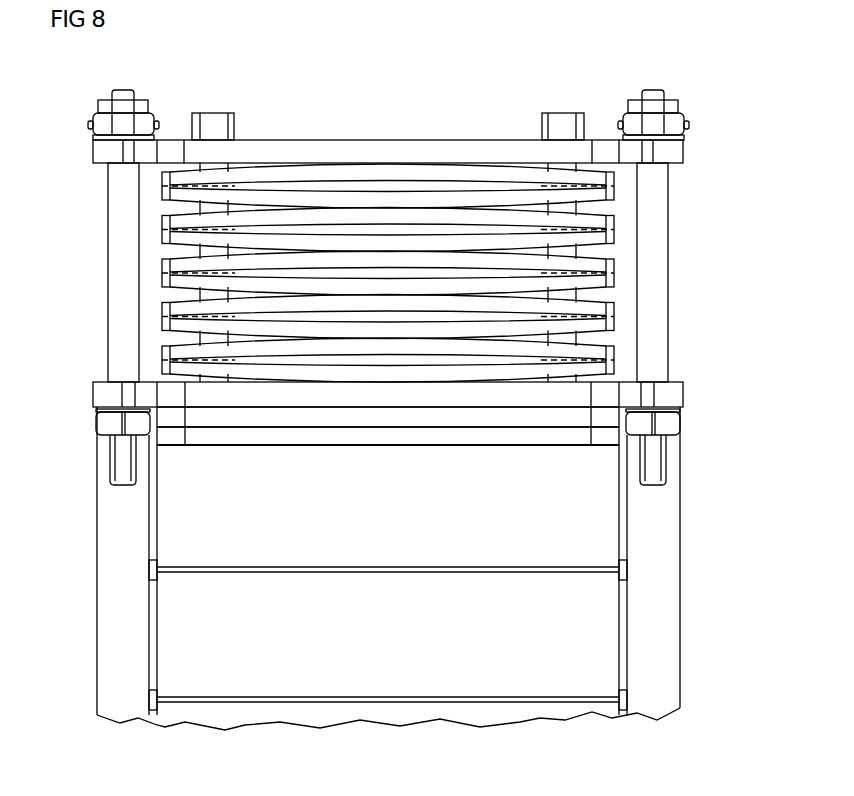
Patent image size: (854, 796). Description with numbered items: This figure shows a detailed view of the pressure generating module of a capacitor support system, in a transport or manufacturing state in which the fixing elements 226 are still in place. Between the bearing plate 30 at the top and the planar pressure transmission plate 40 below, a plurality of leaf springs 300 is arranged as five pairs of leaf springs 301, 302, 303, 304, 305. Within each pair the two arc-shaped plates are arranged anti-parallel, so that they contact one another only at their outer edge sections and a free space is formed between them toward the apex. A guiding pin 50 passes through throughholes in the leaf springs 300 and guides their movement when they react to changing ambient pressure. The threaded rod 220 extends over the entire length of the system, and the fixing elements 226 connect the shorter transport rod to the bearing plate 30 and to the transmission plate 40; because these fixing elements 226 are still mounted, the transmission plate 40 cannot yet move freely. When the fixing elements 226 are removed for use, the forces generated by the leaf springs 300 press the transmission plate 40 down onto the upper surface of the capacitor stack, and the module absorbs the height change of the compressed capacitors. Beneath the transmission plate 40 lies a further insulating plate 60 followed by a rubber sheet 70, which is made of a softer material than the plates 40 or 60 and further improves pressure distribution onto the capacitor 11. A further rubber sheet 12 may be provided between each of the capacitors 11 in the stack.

The capacitor 11 is at (602, 513).
The rubber sheet 12 is at (545, 572).
The bearing plate 30 is at (406, 150).
The pressure transmission plate 40 is at (380, 392).
The guiding pin 50 is at (215, 122).
The insulating plate 60 is at (460, 413).
The rubber sheet 70 is at (542, 437).
The threaded rod 220 is at (657, 202).
The fixing element 226 is at (676, 421).
The leaf springs 300 is at (389, 272).
The first pair of leaf springs 301 is at (161, 186).
The second pair of leaf springs 302 is at (161, 229).
The third pair of leaf springs 303 is at (161, 272).
The fourth pair of leaf springs 304 is at (161, 316).
The fifth pair of leaf springs 305 is at (161, 360).